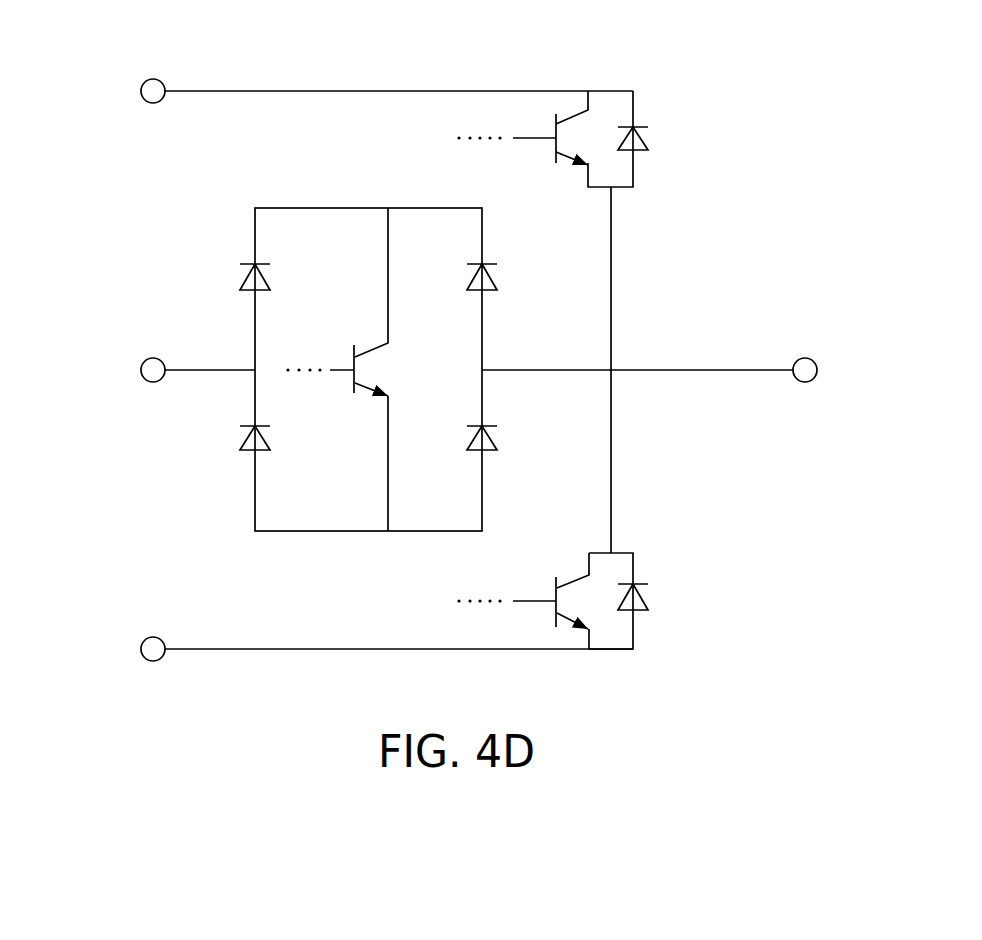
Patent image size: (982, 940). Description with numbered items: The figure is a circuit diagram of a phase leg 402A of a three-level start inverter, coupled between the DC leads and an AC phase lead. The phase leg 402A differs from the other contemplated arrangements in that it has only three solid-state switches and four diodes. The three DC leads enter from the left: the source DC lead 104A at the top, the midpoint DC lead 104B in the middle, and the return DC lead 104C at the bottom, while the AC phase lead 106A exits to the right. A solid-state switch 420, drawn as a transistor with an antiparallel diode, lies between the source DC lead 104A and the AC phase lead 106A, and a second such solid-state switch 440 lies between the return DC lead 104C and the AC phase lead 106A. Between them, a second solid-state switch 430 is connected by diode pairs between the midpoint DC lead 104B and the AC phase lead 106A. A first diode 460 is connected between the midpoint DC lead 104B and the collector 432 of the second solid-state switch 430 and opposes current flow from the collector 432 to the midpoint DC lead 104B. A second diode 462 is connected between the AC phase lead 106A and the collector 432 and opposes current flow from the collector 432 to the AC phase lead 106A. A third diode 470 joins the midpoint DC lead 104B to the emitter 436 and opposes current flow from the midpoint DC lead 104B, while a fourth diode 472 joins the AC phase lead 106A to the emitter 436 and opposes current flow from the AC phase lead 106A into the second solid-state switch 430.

The source DC lead 104A is at (203, 91).
The midpoint DC lead 104B is at (182, 371).
The return DC lead 104C is at (188, 649).
The AC phase lead 106A is at (718, 370).
The solid-state switch 420 is at (660, 100).
The solid-state switch 440 is at (652, 628).
The second solid-state switch 430 is at (369, 369).
The collector 432 is at (372, 345).
The emitter 436 is at (372, 385).
The first diode 460 is at (242, 278).
The second diode 462 is at (493, 276).
The third diode 470 is at (243, 450).
The fourth diode 472 is at (493, 442).
The phase leg 402A is at (183, 705).